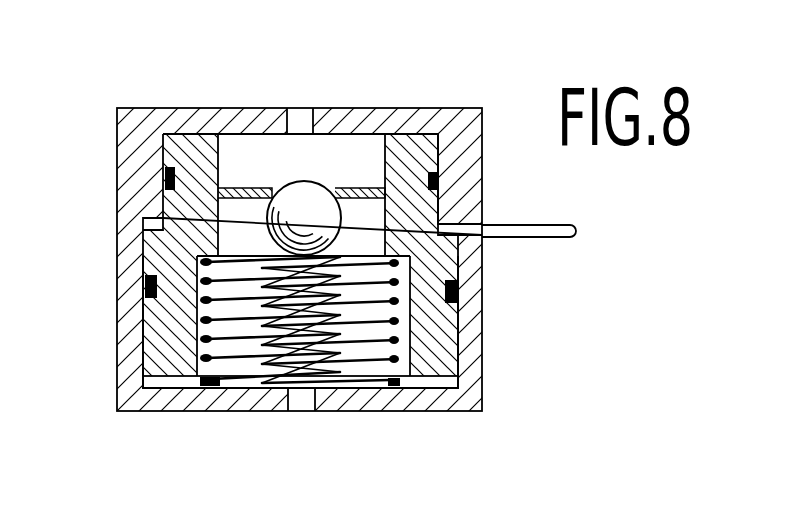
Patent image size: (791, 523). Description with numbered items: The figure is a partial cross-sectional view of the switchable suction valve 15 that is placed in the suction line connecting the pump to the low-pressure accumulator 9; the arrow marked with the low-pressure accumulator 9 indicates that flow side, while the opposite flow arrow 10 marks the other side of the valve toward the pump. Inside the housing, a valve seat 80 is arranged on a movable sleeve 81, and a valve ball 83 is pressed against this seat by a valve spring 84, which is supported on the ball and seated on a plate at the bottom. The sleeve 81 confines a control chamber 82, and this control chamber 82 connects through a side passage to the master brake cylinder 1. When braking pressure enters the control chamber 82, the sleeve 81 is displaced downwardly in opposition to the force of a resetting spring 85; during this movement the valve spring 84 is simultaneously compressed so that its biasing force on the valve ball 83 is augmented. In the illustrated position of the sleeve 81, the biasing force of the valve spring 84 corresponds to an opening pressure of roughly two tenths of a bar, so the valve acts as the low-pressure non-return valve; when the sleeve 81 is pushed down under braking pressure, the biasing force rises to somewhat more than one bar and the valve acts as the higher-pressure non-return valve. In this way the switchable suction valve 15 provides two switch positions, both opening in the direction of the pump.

The switchable suction valve 15 is at (163, 414).
The movable sleeve 81 is at (211, 157).
The valve seat 80 is at (254, 188).
The valve ball 83 is at (307, 212).
The control chamber 82 is at (450, 226).
The valve spring 84 is at (337, 376).
The resetting spring 85 is at (197, 347).
The low-pressure accumulator 9 is at (302, 128).
The outlet flow direction 10 is at (301, 390).
The master brake cylinder 1 is at (582, 232).